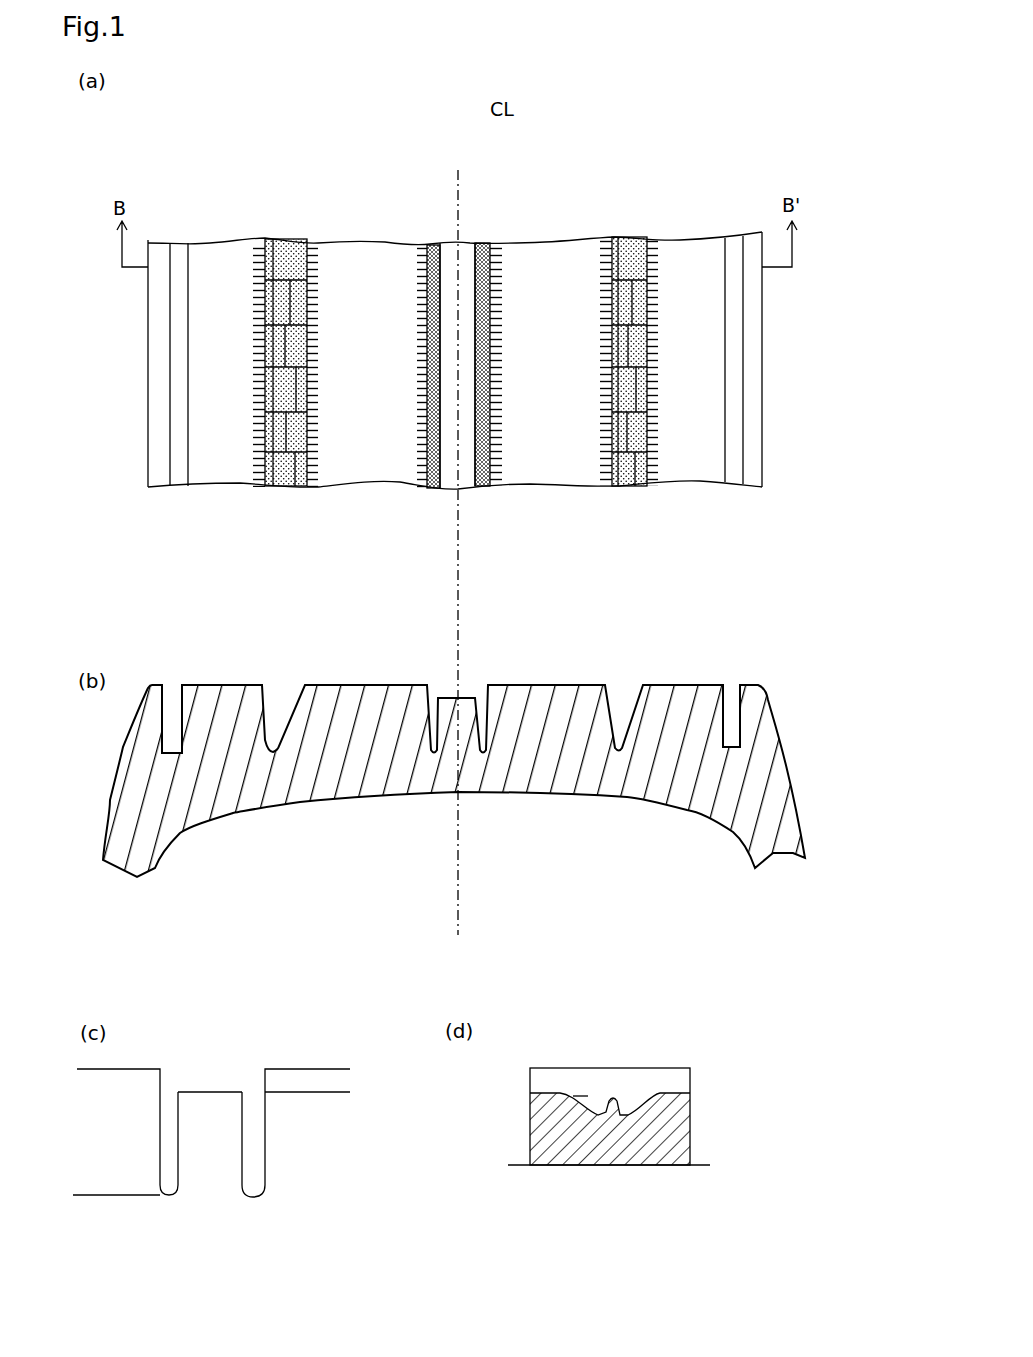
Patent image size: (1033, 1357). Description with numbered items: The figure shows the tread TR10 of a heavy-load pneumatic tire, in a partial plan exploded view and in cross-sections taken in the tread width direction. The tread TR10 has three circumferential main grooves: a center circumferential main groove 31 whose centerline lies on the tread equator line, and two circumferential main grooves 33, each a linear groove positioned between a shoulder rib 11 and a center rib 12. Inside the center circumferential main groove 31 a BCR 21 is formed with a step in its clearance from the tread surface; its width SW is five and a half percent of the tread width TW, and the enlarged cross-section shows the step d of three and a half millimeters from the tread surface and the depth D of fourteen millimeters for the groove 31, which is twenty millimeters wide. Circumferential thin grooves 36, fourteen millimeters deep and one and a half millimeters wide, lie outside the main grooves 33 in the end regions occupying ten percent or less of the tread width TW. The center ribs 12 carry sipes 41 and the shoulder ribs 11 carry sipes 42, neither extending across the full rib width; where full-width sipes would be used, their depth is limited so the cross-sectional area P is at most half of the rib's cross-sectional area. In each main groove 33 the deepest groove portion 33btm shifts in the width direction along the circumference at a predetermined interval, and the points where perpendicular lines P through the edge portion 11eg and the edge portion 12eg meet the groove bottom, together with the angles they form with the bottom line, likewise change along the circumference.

The tread TR10 is at (724, 130).
The circumferential thin groove 36 is at (178, 250).
The shoulder rib 11 is at (225, 258).
The sipe 42 is at (257, 255).
The circumferential main groove 33 is at (288, 250).
The sipe 41 is at (316, 255).
The center rib 12 is at (372, 262).
The center circumferential main groove 31 is at (486, 262).
The BCR 21 is at (452, 258).
The deepest groove portion 33btm is at (297, 490).
The edge portion 11eg is at (265, 700).
The edge portion 12eg is at (303, 700).
The perpendicular line P is at (262, 745).
The width of the tread TW is at (762, 487).
The width of the BCR SW is at (475, 698).
The depth of the circumferential main groove D is at (117, 1069).
The step d is at (323, 1104).